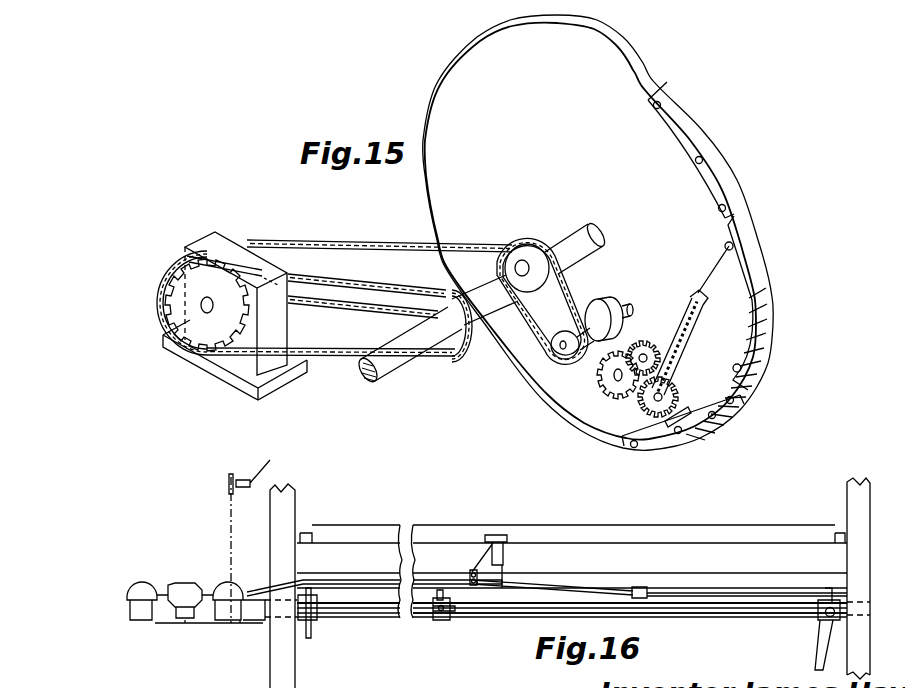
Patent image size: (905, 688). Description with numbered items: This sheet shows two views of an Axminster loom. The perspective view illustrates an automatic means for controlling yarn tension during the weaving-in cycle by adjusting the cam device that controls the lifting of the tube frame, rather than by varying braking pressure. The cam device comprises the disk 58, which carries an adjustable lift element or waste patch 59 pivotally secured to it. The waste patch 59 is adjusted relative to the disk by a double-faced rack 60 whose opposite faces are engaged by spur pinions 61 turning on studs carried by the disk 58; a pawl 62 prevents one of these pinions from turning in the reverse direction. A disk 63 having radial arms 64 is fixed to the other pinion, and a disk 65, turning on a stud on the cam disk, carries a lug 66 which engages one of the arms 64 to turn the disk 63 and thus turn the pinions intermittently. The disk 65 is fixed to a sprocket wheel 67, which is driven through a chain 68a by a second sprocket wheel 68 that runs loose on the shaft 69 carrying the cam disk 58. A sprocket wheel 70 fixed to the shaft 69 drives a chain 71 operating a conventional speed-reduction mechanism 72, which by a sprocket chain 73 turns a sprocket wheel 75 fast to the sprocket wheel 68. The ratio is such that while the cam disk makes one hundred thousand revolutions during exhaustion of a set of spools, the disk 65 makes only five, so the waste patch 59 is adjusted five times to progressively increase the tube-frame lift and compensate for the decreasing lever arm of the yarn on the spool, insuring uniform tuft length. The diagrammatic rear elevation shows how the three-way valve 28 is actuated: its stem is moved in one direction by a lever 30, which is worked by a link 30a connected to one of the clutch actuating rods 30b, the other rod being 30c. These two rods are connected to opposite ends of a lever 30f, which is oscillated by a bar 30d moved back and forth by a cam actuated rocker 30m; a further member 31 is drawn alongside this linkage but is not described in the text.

In FIG. 16, the three-way valve 28 is at (503, 540).
In FIG. 16, the lever 30 is at (484, 540).
In FIG. 16, the link 30a is at (567, 566).
In FIG. 16, the clutch actuating rod 30b is at (695, 595).
In FIG. 16, the clutch actuating rod 30c is at (436, 606).
In FIG. 16, the bar 30d is at (710, 612).
In FIG. 16, the lever 30f is at (453, 618).
In FIG. 16, the cam actuated rocker 30m is at (817, 660).
In FIG. 16, the link rod 31 is at (347, 582).
In FIG. 15, the disk 58 is at (700, 188).
In FIG. 15, the adjustable lift element or waste patch 59 is at (760, 296).
In FIG. 15, the double-faced rack 60 is at (700, 318).
In FIG. 15, the spur pinions 61 is at (646, 350).
In FIG. 15, the pawl 62 is at (670, 418).
In FIG. 15, the disk 63 is at (600, 380).
In FIG. 15, the radial arms 64 is at (612, 396).
In FIG. 15, the disk 65 is at (597, 312).
In FIG. 15, the lug 66 is at (610, 333).
In FIG. 15, the sprocket wheel 67 is at (560, 353).
In FIG. 15, the second sprocket wheel 68 is at (518, 252).
In FIG. 15, the chain 68a is at (562, 290).
In FIG. 15, the shaft 69 is at (405, 370).
In FIG. 15, the sprocket wheel 70 is at (462, 345).
In FIG. 15, the chain 71 is at (427, 293).
In FIG. 15, the speed-reduction mechanism 72 is at (200, 237).
In FIG. 15, the sprocket chain 73 is at (330, 235).
In FIG. 15, the sprocket wheel 75 is at (490, 264).